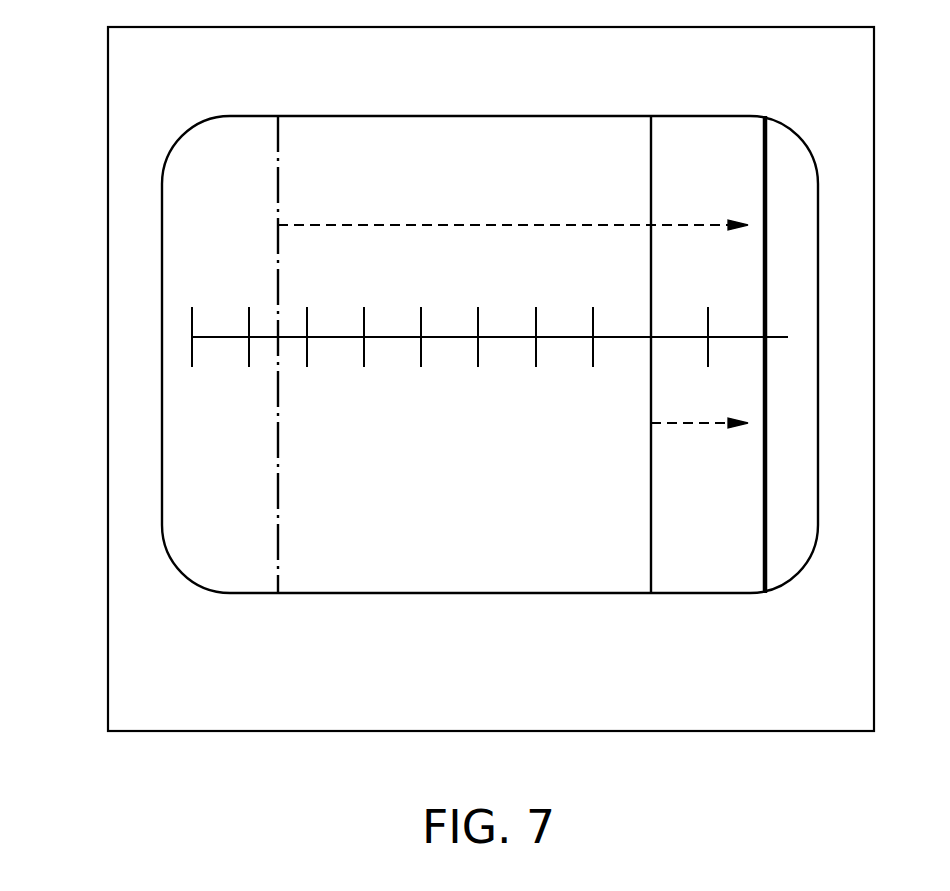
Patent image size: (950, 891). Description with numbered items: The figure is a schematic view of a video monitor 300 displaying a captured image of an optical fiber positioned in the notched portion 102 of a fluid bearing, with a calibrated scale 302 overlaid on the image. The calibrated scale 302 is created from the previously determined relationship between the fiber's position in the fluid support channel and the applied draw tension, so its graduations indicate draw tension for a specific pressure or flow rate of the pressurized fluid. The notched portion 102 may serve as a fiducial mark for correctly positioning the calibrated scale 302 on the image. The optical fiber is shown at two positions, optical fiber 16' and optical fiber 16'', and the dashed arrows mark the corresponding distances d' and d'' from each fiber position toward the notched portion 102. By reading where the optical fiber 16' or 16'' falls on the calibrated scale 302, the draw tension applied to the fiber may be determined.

The video monitor 300 is at (151, 765).
The calibrated scale 302 is at (228, 335).
The optical fiber 16' is at (243, 354).
The optical fiber 16'' is at (615, 354).
The notched portion 102 is at (763, 288).
The first distance d' is at (513, 197).
The second distance d'' is at (699, 454).